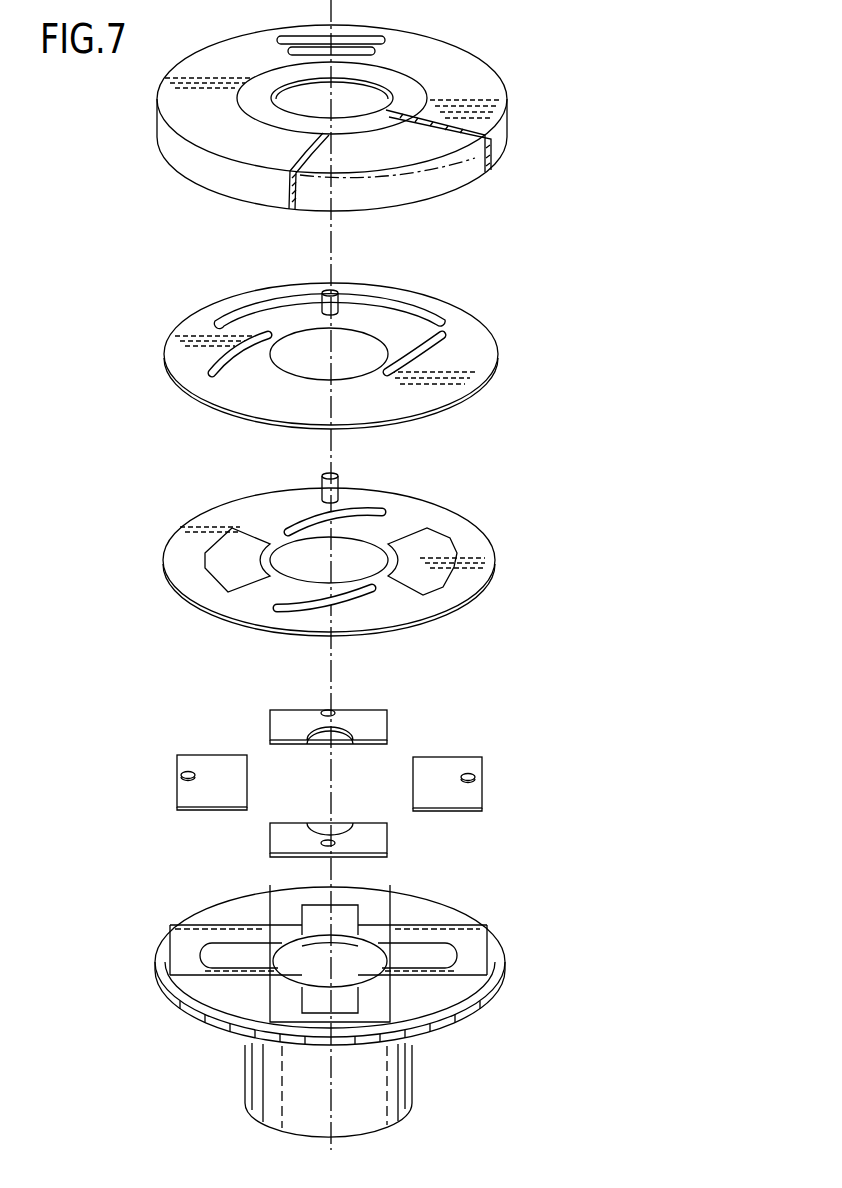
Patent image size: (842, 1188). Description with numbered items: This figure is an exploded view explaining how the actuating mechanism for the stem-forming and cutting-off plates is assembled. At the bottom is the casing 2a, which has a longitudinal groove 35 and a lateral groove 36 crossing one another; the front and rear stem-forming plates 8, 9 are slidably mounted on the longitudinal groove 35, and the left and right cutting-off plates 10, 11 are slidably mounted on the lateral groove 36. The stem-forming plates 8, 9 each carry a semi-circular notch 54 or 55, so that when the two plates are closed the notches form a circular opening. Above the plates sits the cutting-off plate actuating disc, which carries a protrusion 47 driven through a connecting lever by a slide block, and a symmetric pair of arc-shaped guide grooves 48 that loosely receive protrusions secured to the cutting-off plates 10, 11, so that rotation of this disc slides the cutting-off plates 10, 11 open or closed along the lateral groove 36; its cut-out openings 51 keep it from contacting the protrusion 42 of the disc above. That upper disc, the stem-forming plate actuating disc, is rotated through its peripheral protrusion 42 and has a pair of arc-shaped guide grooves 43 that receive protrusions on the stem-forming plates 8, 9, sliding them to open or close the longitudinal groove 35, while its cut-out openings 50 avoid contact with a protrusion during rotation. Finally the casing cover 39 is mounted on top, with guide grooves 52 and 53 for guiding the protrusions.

The casing cover 39 is at (488, 93).
The guide groove 52 is at (384, 40).
The guide groove 53 is at (341, 50).
The cut-out openings 51 is at (390, 300).
The protrusion 47 is at (334, 289).
The arc-shaped guide grooves 48 is at (434, 342).
The cut-out openings 50 is at (212, 568).
The arc-shaped guide grooves 43 is at (323, 518).
The protrusion 42 is at (338, 484).
The stem-forming plate 9 is at (353, 722).
The semi-circular notch 55 is at (322, 733).
The stem-forming plate 8 is at (273, 828).
The semi-circular notch 54 is at (332, 829).
The cutting-off plate 10 is at (218, 803).
The cutting-off plate 11 is at (447, 805).
The casing 2a is at (428, 1034).
The lateral groove 36 is at (175, 948).
The longitudinal groove 35 is at (377, 990).